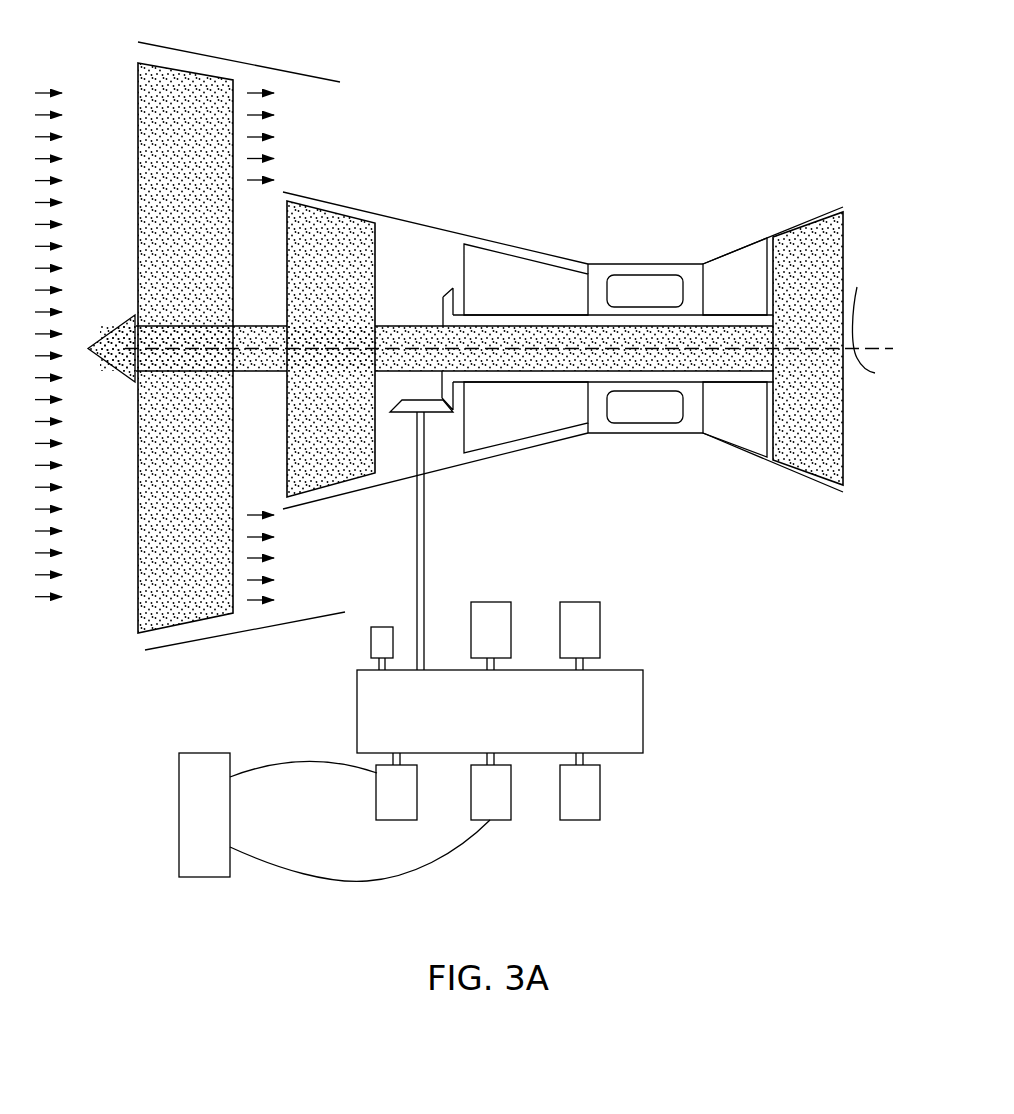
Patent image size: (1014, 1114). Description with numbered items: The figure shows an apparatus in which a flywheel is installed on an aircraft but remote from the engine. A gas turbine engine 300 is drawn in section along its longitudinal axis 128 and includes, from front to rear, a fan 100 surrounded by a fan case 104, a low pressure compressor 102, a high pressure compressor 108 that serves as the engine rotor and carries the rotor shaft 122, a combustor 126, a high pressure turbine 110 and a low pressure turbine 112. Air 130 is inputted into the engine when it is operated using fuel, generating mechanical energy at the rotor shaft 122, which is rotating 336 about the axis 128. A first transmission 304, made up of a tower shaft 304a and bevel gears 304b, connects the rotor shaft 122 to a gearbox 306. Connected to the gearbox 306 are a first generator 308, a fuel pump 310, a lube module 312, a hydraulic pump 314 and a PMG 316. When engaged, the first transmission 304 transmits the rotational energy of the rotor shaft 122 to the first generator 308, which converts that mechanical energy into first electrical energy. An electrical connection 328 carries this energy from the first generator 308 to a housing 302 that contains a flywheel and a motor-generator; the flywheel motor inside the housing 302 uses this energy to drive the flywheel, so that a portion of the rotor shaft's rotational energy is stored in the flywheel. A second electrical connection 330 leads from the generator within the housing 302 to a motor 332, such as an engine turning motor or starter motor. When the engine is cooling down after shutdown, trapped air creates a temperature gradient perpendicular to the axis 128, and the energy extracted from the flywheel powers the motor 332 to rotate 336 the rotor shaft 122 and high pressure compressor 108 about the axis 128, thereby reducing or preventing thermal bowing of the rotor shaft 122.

The fan 100 is at (218, 290).
The low pressure compressor 102 is at (336, 196).
The fan case 104 is at (232, 62).
The high pressure compressor 108 is at (520, 248).
The high pressure turbine 110 is at (748, 264).
The low pressure turbine 112 is at (830, 462).
The rotor shaft 122 is at (755, 318).
The combustor 126 is at (659, 436).
The longitudinal axis 128 is at (823, 351).
The air 130 is at (252, 136).
The gas turbine engine 300 is at (580, 76).
The housing 302 is at (165, 778).
The first transmission 304 is at (458, 554).
The tower shaft 304a is at (440, 511).
The bevel gears 304b is at (424, 389).
The gearbox 306 is at (643, 715).
The first generator 308 is at (376, 797).
The fuel pump 310 is at (600, 636).
The lube module 312 is at (511, 622).
The hydraulic pump 314 is at (600, 790).
The PMG 316 is at (371, 648).
The electrical connection 328 is at (280, 762).
The electrical connection 330 is at (337, 880).
The motor 332 is at (511, 797).
The rotating 336 is at (877, 330).